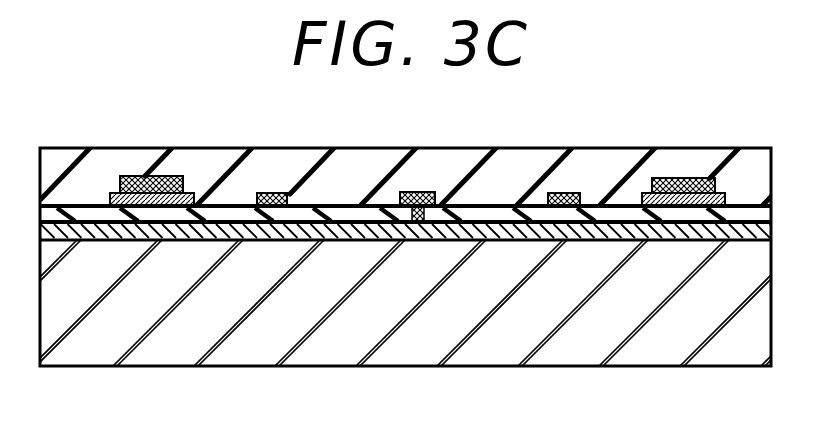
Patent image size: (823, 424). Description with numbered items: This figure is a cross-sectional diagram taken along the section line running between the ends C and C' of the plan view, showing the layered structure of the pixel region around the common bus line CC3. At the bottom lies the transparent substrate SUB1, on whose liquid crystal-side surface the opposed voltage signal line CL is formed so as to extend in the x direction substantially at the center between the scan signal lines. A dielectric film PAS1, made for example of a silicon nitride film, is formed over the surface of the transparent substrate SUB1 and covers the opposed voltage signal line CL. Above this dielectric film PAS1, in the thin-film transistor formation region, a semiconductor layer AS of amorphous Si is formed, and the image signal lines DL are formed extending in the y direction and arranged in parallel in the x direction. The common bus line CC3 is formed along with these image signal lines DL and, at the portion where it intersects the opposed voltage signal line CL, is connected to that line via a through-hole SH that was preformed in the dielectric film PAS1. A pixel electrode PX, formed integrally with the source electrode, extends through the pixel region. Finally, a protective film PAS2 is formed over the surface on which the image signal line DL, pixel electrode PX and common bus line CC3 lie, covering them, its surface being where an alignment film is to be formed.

The semiconductor layer AS is at (110, 190).
The image signal line DL is at (417, 170).
The pixel electrode PX is at (417, 186).
The common bus line CC3 is at (418, 192).
The protective film PAS2 is at (515, 162).
The dielectric film PAS1 is at (500, 215).
The opposed voltage signal line CL is at (177, 240).
The through-hole SH is at (419, 222).
The transparent substrate SUB1 is at (411, 303).
The section line end C is at (28, 290).
The section line end C' is at (786, 292).